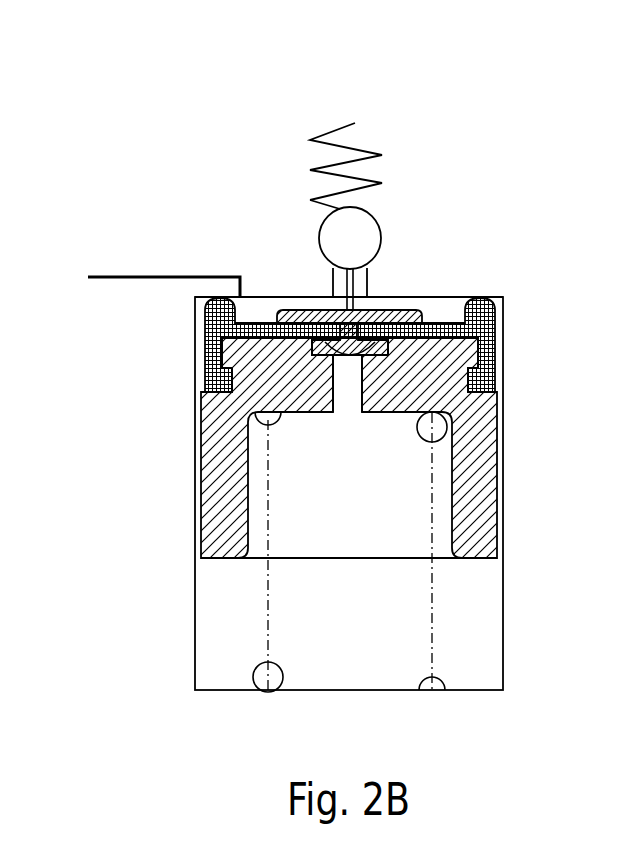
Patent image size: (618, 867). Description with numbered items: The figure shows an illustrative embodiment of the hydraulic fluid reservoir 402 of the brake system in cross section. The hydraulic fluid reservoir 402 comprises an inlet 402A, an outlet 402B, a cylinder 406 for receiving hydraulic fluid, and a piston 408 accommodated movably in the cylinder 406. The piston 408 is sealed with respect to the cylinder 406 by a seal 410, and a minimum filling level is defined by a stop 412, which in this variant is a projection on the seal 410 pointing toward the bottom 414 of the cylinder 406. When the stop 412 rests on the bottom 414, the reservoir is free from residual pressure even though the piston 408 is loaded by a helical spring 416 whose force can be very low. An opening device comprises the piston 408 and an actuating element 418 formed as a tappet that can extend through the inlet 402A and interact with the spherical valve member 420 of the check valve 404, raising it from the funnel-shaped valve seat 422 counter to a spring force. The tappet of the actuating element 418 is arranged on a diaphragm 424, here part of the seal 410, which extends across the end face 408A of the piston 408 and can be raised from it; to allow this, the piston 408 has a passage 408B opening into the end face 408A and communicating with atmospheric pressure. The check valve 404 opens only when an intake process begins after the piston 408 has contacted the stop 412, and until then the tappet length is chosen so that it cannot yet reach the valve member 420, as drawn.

The hydraulic fluid reservoir 402 is at (212, 135).
The inlet 402A is at (338, 287).
The outlet 402B is at (167, 276).
The check valve 404 is at (428, 124).
The cylinder 406 is at (503, 680).
The piston 408 is at (485, 537).
The end face 408A is at (405, 347).
The passage 408B is at (343, 403).
The seal 410 is at (497, 383).
The stop 412 is at (497, 318).
The bottom 414 is at (453, 297).
The helical spring 416 is at (282, 675).
The actuating element 418 is at (365, 283).
The spherical valve member 420 is at (322, 220).
The funnel-shaped valve seat 422 is at (382, 245).
The diaphragm 424 is at (250, 323).